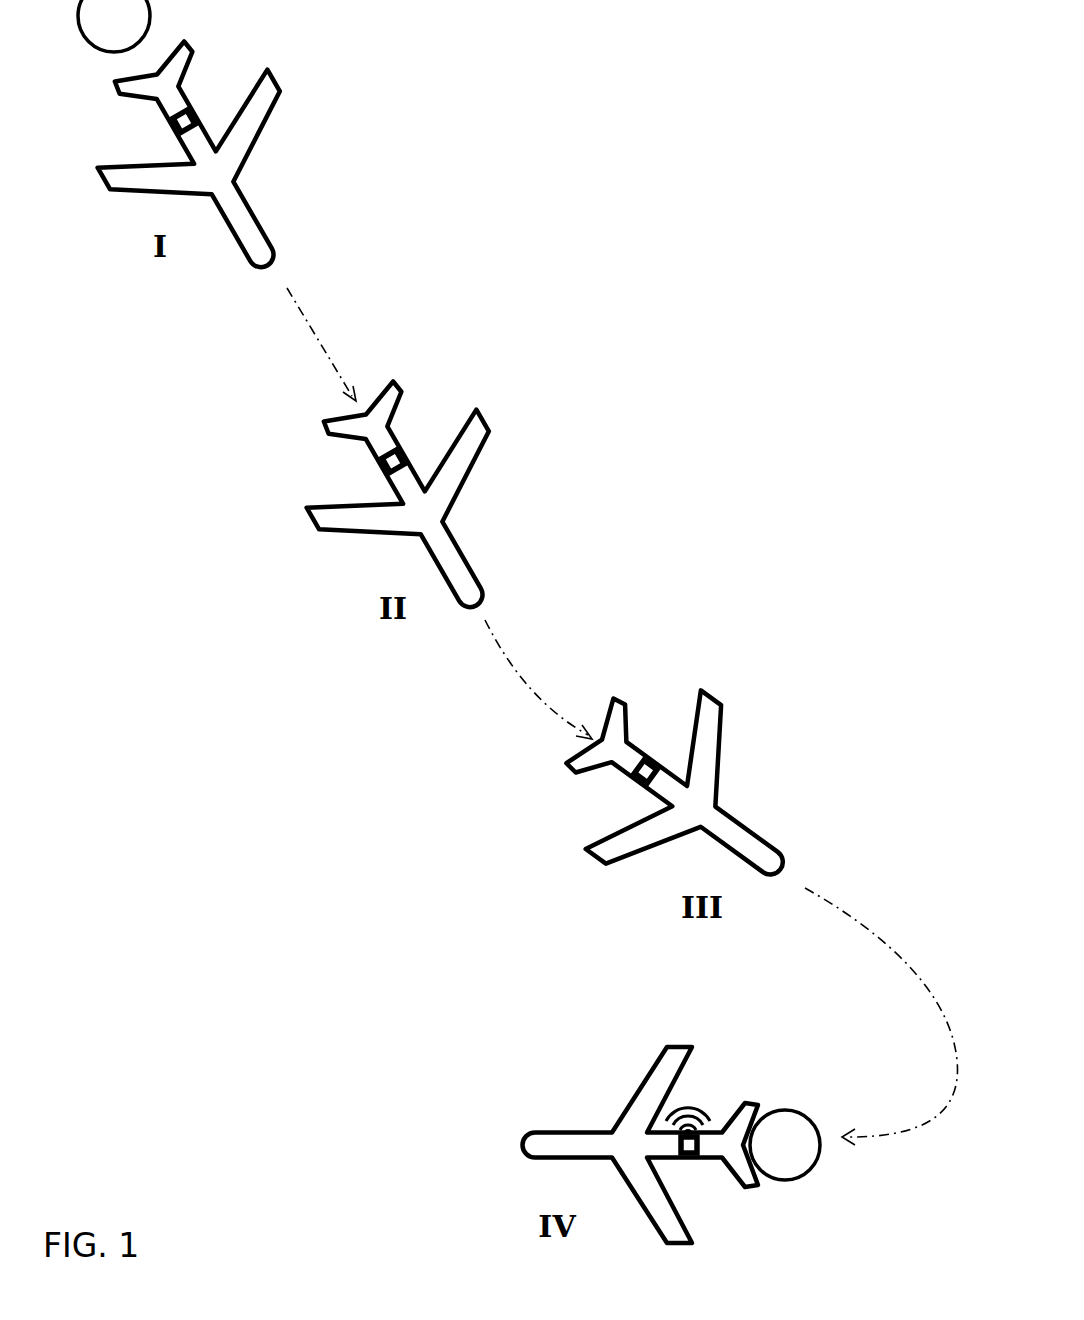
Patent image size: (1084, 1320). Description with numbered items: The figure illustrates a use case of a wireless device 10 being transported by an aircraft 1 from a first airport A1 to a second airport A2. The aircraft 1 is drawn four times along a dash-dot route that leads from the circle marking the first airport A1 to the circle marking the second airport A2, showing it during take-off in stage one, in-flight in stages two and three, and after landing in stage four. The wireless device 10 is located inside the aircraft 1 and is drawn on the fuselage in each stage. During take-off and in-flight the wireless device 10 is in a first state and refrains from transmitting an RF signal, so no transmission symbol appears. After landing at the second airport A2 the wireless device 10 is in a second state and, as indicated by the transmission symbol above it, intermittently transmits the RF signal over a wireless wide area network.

The aircraft 1 is at (247, 173).
The wireless device 10 is at (177, 123).
The first airport A1 is at (114, 26).
The second airport A2 is at (785, 1145).